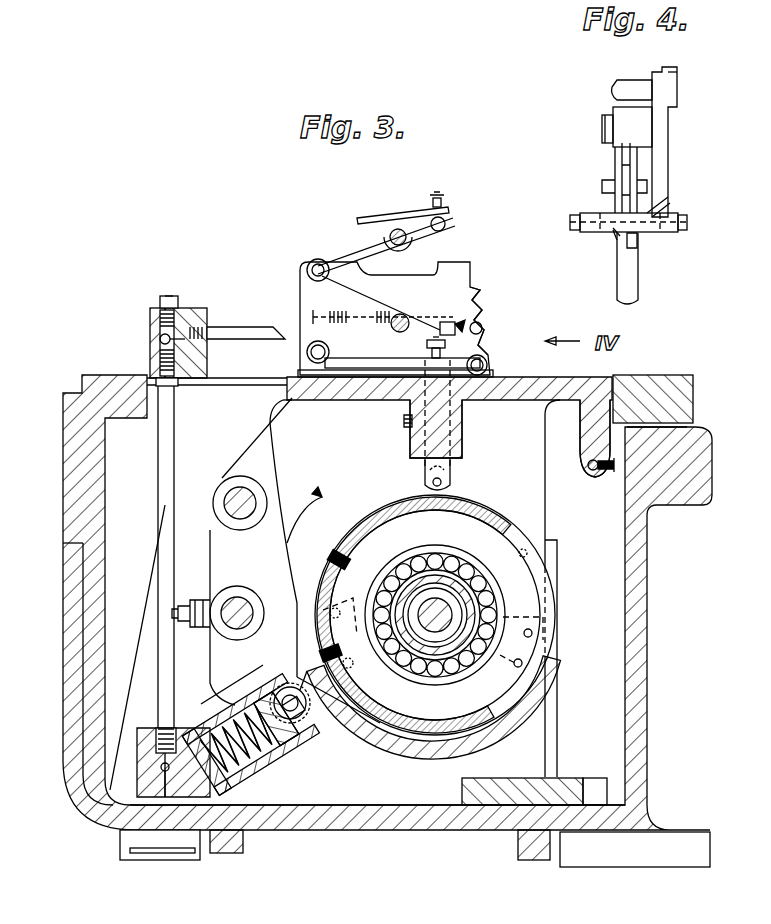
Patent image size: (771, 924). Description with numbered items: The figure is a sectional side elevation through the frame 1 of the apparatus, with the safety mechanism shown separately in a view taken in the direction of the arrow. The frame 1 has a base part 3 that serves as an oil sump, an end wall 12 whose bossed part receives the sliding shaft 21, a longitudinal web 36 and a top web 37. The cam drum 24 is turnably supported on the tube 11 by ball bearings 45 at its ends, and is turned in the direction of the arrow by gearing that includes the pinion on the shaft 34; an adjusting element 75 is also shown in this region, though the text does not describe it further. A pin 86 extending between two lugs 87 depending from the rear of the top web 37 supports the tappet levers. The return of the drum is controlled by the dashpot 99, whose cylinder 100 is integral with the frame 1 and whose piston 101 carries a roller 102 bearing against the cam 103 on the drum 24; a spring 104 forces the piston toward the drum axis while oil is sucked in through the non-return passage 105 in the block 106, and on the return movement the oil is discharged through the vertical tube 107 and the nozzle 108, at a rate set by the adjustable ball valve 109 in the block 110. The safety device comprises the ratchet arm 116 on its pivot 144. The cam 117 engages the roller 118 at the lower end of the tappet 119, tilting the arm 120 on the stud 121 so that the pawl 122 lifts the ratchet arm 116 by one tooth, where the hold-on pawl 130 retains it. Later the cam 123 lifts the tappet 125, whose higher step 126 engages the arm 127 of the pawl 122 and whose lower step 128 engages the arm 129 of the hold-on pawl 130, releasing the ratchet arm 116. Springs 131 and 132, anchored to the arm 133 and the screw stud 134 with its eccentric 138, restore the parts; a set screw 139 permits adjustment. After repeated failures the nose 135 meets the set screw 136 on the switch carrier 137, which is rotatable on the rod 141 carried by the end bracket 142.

In FIG. 3, the frame 1 is at (240, 453).
In FIG. 3, the base part 3 is at (77, 442).
In FIG. 3, the tube 11 is at (413, 593).
In FIG. 3, the end wall 12 is at (307, 425).
In FIG. 3, the shaft 21 is at (247, 493).
In FIG. 3, the cam drum 24 is at (508, 513).
In FIG. 3, the shaft 34 is at (237, 598).
In FIG. 3, the longitudinal web 36 is at (510, 793).
In FIG. 3, the top web 37 is at (530, 383).
In FIG. 3, the ball bearings 45 is at (445, 558).
In FIG. 3, the adjusting screw 75 is at (182, 600).
In FIG. 3, the pin 86 is at (595, 473).
In FIG. 3, the lugs 87 is at (588, 437).
In FIG. 3, the dashpot 99 is at (288, 760).
In FIG. 3, the cylinder 100 is at (207, 718).
In FIG. 3, the piston 101 is at (238, 693).
In FIG. 3, the roller 102 is at (290, 690).
In FIG. 3, the cam 103 is at (377, 752).
In FIG. 3, the spring 104 is at (237, 787).
In FIG. 3, the non-return passage 105 is at (153, 783).
In FIG. 3, the block 106 is at (127, 773).
In FIG. 3, the vertical tube 107 is at (163, 508).
In FIG. 3, the nozzle 108 is at (227, 330).
In FIG. 3, the adjustable ball valve 109 is at (160, 338).
In FIG. 3, the block 110 is at (160, 333).
In FIG. 3, the ratchet arm 116 is at (462, 268).
In FIG. 3, the cam 117 is at (385, 497).
In FIG. 3, the roller 118 is at (447, 492).
In FIG. 3, the tappet 119 is at (452, 460).
In FIG. 3, the arm 120 is at (362, 370).
In FIG. 3, the stud 121 is at (322, 348).
In FIG. 3, the pawl 122 is at (481, 327).
In FIG. 4, the pawl 122 is at (617, 155).
In FIG. 3, the cam 123 is at (297, 647).
In FIG. 4, the cam 123 is at (570, 213).
In FIG. 4, the tappet 125 is at (628, 275).
In FIG. 4, the higher step 126 is at (622, 233).
In FIG. 3, the arm 127 is at (428, 365).
In FIG. 4, the arm 127 is at (613, 232).
In FIG. 4, the lower step 128 is at (637, 243).
In FIG. 4, the arm 129 is at (648, 212).
In FIG. 4, the hold-on pawl 130 is at (632, 160).
In FIG. 3, the spring 131 is at (357, 316).
In FIG. 3, the spring 132 is at (445, 324).
In FIG. 3, the arm 133 is at (317, 303).
In FIG. 3, the screw stud 134 is at (393, 316).
In FIG. 3, the nose 135 is at (457, 250).
In FIG. 3, the set screw 136 is at (443, 203).
In FIG. 3, the switch carrier 137 is at (390, 217).
In FIG. 3, the eccentric 138 is at (404, 315).
In FIG. 3, the set screw 139 is at (449, 357).
In FIG. 3, the rod 141 is at (398, 245).
In FIG. 4, the rod 141 is at (615, 92).
In FIG. 3, the end bracket 142 is at (352, 247).
In FIG. 4, the end bracket 142 is at (663, 130).
In FIG. 3, the pivot 144 is at (313, 265).
In FIG. 4, the pivot 144 is at (605, 128).